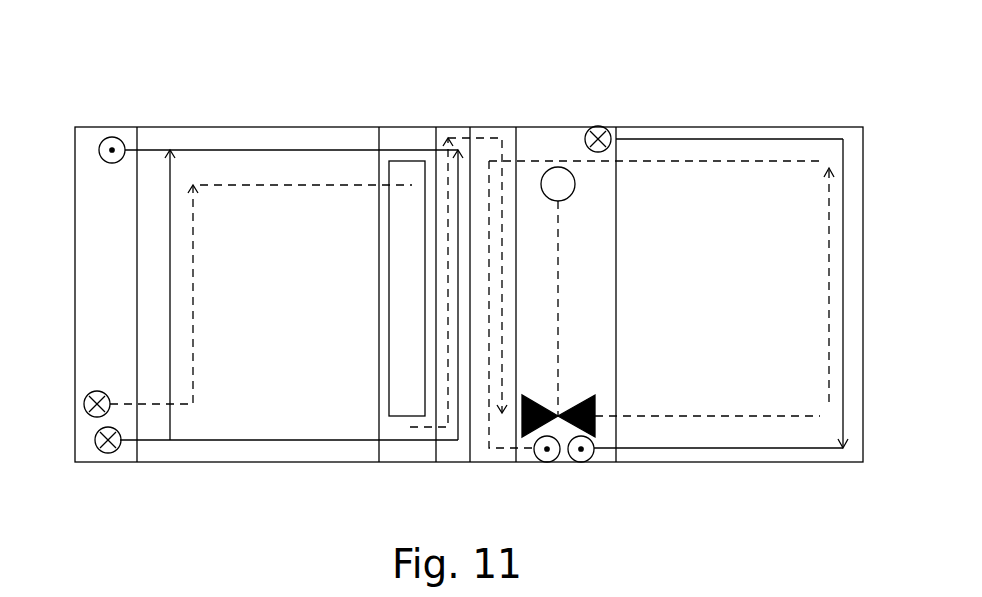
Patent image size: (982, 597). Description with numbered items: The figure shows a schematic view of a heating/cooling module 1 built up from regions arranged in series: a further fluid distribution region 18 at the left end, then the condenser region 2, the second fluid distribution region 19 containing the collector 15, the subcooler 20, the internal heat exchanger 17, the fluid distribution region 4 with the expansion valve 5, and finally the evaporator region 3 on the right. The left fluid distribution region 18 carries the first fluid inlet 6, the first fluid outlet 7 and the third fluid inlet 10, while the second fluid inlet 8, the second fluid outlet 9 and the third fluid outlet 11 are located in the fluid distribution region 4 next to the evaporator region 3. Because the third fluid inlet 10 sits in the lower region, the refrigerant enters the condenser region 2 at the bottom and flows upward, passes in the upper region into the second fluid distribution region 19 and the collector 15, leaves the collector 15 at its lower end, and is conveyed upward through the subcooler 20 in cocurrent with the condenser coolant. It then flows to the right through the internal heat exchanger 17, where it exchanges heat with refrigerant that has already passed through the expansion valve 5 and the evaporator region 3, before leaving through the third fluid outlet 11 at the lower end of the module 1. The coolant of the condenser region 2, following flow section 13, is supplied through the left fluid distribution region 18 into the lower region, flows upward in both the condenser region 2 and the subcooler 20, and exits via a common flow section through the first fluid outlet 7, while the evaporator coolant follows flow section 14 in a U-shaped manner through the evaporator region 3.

The heating/cooling module 1 is at (444, 85).
The condenser region 2 is at (262, 127).
The evaporator region 3 is at (700, 127).
The fluid distribution region 4 is at (553, 127).
The expansion valve 5 is at (560, 425).
The first fluid inlet 6 is at (108, 453).
The first fluid outlet 7 is at (112, 137).
The second fluid inlet 8 is at (598, 126).
The second fluid outlet 9 is at (589, 461).
The third fluid inlet 10 is at (85, 406).
The third fluid outlet 11 is at (540, 460).
The flow section 13 is at (188, 147).
The flow section 14 is at (843, 283).
The collector 15 is at (400, 172).
The internal heat exchanger 17 is at (505, 127).
The further fluid distribution region 18 is at (98, 252).
The second fluid distribution region 19 is at (425, 127).
The subcooler 20 is at (462, 127).